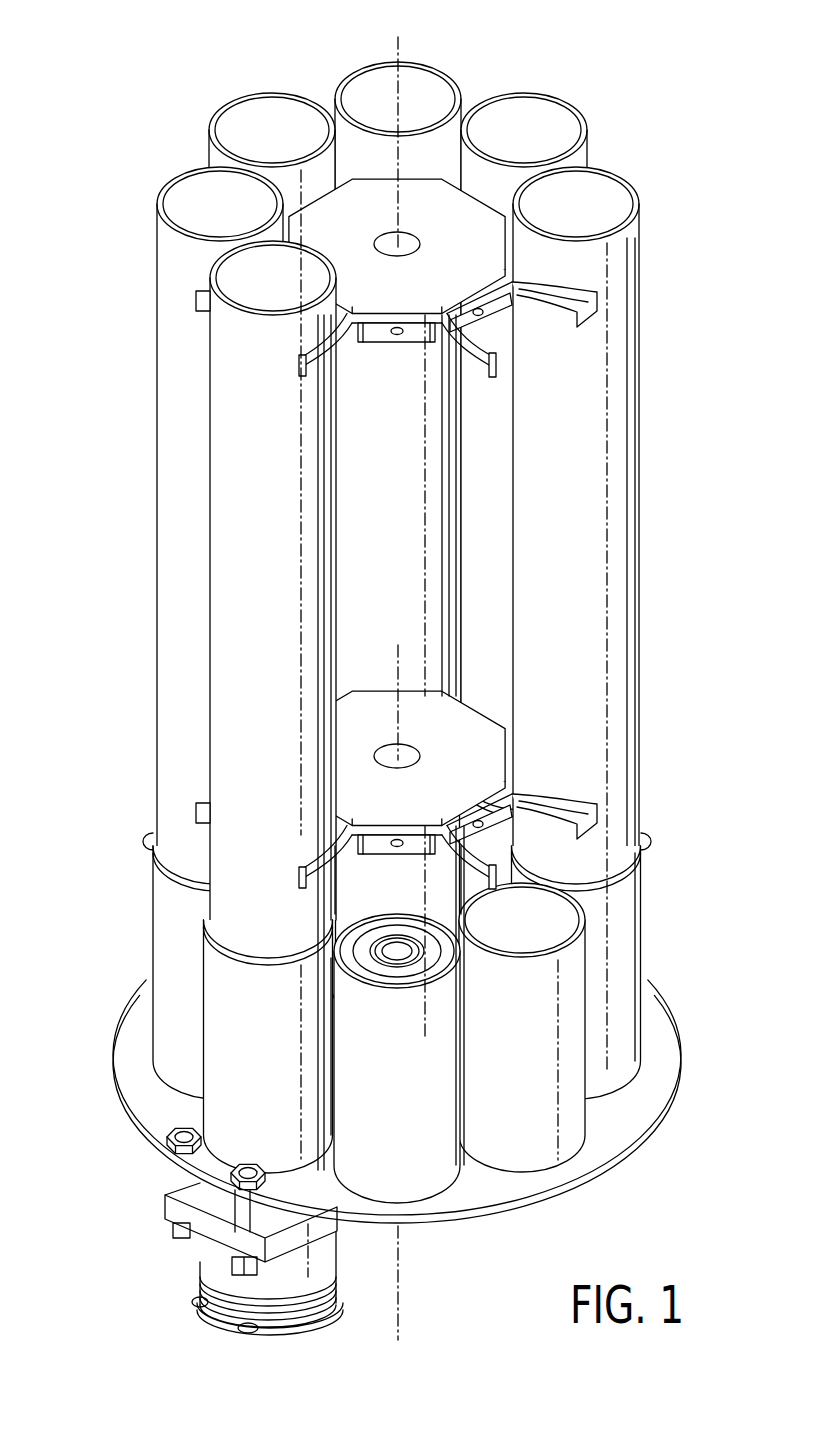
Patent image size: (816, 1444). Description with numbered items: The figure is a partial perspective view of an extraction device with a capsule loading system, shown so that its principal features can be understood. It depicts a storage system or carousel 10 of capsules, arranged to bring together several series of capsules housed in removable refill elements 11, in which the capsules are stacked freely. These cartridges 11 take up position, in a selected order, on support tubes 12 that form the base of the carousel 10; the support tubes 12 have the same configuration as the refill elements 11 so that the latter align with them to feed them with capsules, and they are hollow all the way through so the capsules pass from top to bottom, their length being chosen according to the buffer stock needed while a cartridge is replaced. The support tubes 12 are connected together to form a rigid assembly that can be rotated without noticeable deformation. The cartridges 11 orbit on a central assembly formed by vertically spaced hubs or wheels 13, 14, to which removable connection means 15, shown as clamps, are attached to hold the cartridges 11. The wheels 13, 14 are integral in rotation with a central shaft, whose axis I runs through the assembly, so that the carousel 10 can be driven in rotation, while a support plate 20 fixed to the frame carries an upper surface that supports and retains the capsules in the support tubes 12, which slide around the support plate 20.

The carousel 10 is at (90, 186).
The refill element 11 is at (643, 343).
The support tube 12 is at (649, 943).
The wheel 13 is at (485, 233).
The wheel 14 is at (482, 760).
The connection means 15 is at (612, 810).
The support plate 20 is at (642, 1162).
The central axis I is at (399, 50).